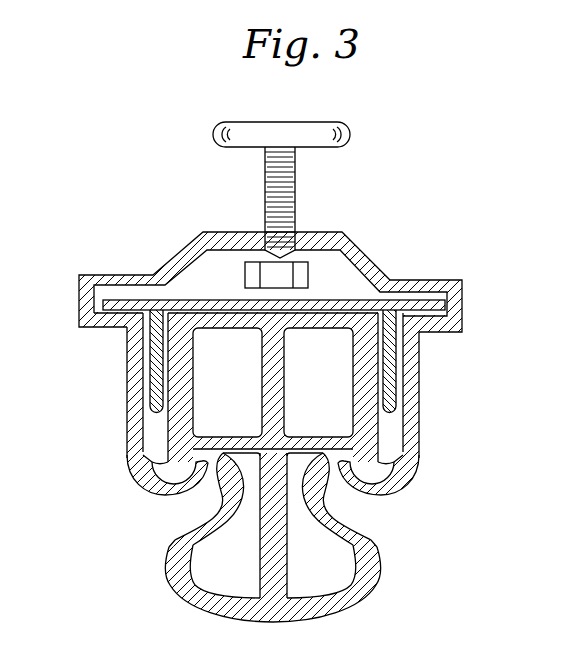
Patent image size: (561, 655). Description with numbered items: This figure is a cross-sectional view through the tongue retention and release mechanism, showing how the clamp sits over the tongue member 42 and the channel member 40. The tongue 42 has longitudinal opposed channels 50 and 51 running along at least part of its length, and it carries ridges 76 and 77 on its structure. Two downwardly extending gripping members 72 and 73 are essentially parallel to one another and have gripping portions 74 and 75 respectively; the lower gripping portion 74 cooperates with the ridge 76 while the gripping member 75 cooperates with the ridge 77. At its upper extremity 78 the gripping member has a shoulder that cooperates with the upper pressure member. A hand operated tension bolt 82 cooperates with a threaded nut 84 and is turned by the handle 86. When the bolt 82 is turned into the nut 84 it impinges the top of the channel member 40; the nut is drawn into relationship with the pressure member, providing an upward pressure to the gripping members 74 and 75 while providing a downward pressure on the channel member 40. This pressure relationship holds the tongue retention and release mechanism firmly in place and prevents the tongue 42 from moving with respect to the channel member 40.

The channel member 40 is at (192, 292).
The tongue member 42 is at (378, 583).
The longitudinal channel 50 is at (352, 524).
The longitudinal channel 51 is at (220, 497).
The downwardly extending gripping member 72 is at (420, 384).
The downwardly extending gripping member 73 is at (138, 385).
The lower gripping portion 74 is at (394, 499).
The gripping member 75 is at (160, 494).
The ridge 76 is at (418, 458).
The ridge 77 is at (160, 468).
The upper extremity 78 is at (392, 278).
The hand operated tension bolt 82 is at (300, 197).
The threaded nut 84 is at (310, 284).
The handle 86 is at (346, 123).